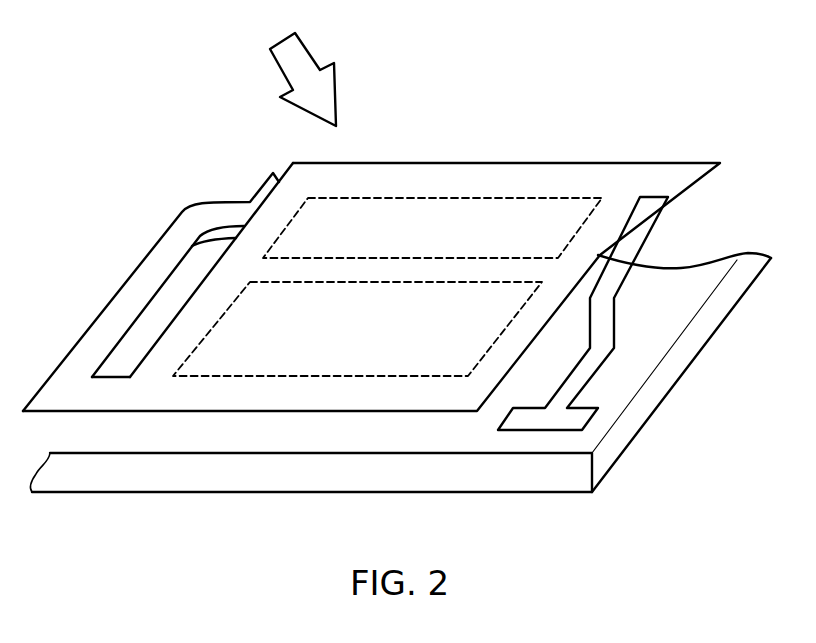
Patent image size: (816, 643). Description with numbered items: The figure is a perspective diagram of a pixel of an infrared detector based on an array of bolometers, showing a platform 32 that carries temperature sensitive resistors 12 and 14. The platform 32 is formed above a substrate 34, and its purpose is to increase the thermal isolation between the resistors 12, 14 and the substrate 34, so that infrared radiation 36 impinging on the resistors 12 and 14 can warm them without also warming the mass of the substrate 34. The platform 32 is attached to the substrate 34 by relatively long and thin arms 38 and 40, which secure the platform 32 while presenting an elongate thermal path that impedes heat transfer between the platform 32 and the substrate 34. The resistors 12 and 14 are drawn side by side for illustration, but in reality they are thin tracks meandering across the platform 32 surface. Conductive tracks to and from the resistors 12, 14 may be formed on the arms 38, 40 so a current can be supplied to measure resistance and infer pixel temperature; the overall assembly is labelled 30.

The resistor 12 is at (443, 247).
The resistor 14 is at (380, 344).
The sensor assembly 30 is at (683, 458).
The platform 32 is at (472, 163).
The substrate 34 is at (208, 473).
The infrared radiation 36 is at (307, 48).
The arm 38 is at (668, 237).
The arm 40 is at (122, 304).